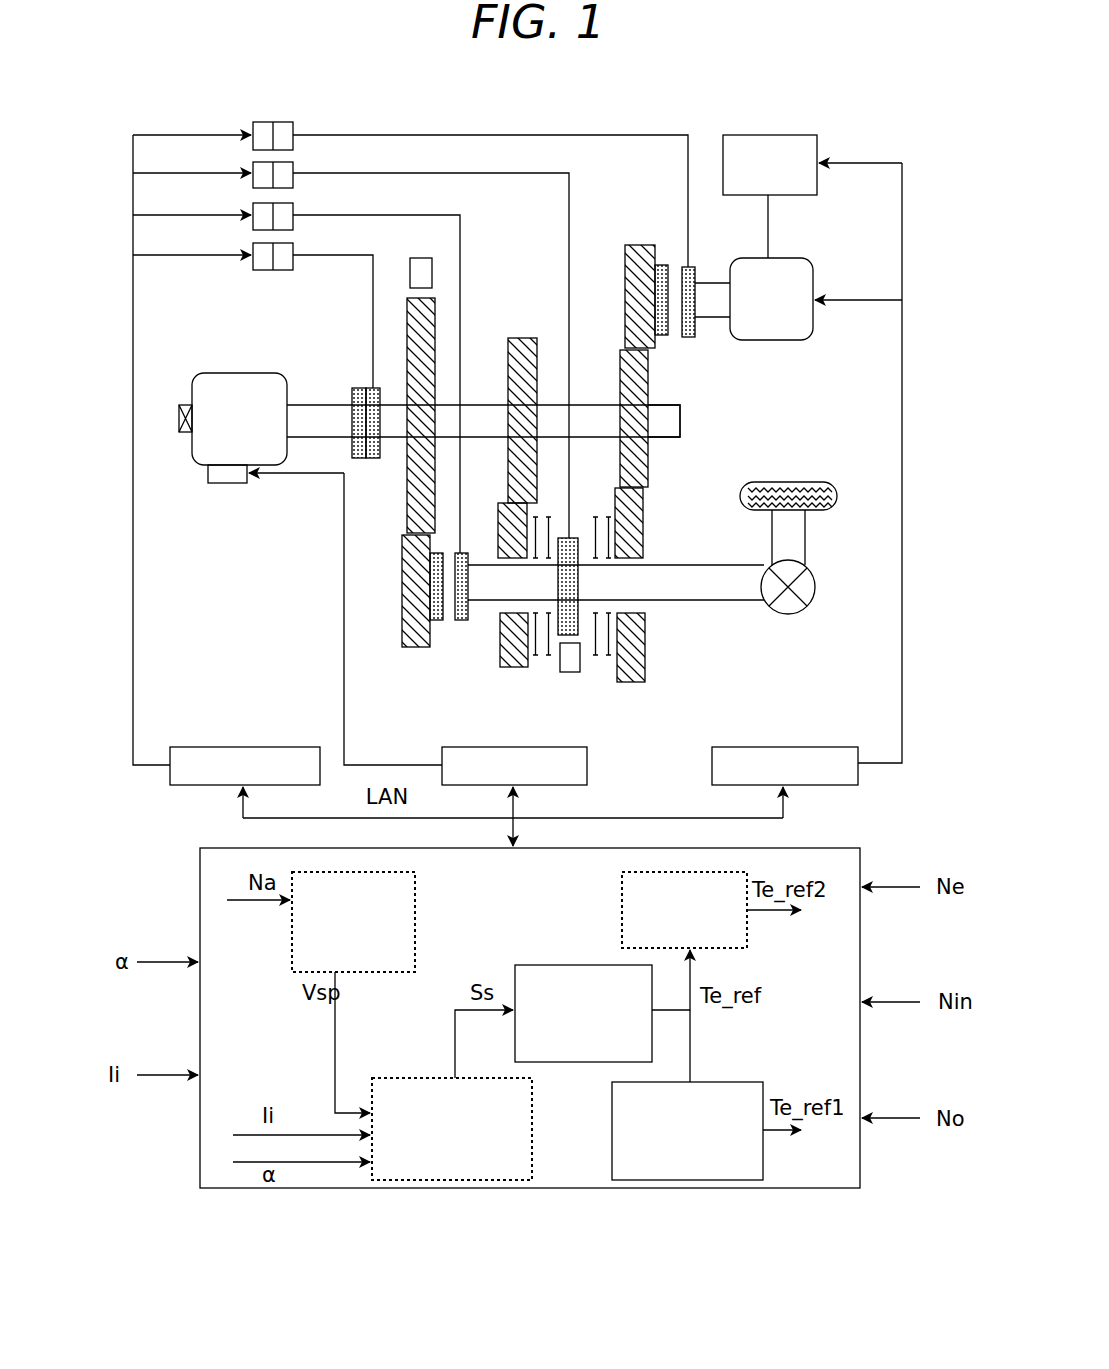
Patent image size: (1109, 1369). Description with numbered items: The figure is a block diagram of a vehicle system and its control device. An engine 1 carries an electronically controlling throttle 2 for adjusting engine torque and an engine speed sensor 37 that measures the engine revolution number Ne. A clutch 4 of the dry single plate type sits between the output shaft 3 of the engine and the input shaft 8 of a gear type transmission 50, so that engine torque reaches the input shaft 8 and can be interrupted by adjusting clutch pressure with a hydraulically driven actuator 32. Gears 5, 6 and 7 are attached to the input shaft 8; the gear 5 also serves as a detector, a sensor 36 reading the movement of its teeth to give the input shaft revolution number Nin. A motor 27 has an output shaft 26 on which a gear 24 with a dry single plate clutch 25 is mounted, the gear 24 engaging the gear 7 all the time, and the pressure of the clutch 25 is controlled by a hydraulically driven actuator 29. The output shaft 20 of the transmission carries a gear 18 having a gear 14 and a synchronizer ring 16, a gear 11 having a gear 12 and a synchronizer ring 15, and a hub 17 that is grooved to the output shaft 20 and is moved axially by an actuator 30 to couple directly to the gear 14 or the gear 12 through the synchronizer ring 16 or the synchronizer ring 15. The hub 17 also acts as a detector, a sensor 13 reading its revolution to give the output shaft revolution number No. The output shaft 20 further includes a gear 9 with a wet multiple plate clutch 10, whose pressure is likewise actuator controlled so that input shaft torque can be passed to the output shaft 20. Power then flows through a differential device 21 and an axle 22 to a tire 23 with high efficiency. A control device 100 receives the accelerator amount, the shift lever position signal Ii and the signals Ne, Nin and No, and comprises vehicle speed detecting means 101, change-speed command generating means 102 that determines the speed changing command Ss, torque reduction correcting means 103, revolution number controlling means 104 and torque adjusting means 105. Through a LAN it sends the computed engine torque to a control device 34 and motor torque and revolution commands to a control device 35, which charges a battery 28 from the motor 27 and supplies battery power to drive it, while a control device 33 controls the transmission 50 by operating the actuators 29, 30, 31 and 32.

The engine 1 is at (222, 373).
The electronically controlling throttle 2 is at (228, 483).
The output shaft 3 is at (314, 405).
The clutch 4 is at (358, 388).
The gear 5 is at (410, 365).
The gear 6 is at (518, 338).
The gear 7 is at (620, 352).
The input shaft 8 is at (668, 430).
The gear 9 is at (416, 647).
The clutch 10 is at (455, 620).
The gear 11 is at (508, 667).
The gear 12 is at (538, 657).
The sensor 13 is at (572, 672).
The gear 14 is at (614, 655).
The synchronizer ring 15 is at (543, 517).
The synchronizer ring 16 is at (596, 517).
The hub 17 is at (576, 538).
The gear 18 is at (645, 660).
The output shaft 20 is at (742, 565).
The differential device 21 is at (805, 608).
The axle 22 is at (792, 550).
The tire 23 is at (800, 482).
The gear 24 is at (640, 245).
The clutch 25 is at (690, 337).
The output shaft 26 is at (720, 283).
The motor 27 is at (790, 340).
The battery 28 is at (772, 130).
The actuator 29 is at (297, 128).
The actuator 30 is at (297, 168).
The actuator 31 is at (297, 209).
The actuator 32 is at (297, 249).
The control device 33 is at (210, 747).
The control device 34 is at (587, 762).
The control device 35 is at (785, 747).
The sensor 36 is at (422, 258).
The engine speed sensor 37 is at (180, 403).
The gear type transmission 50 is at (525, 285).
The control device 100 is at (838, 848).
The vehicle speed detecting means 101 is at (415, 896).
The change-speed command generating means 102 is at (532, 1135).
The torque reduction correcting means 103 is at (535, 965).
The revolution number controlling means 104 is at (612, 1116).
The torque adjusting means 105 is at (622, 906).